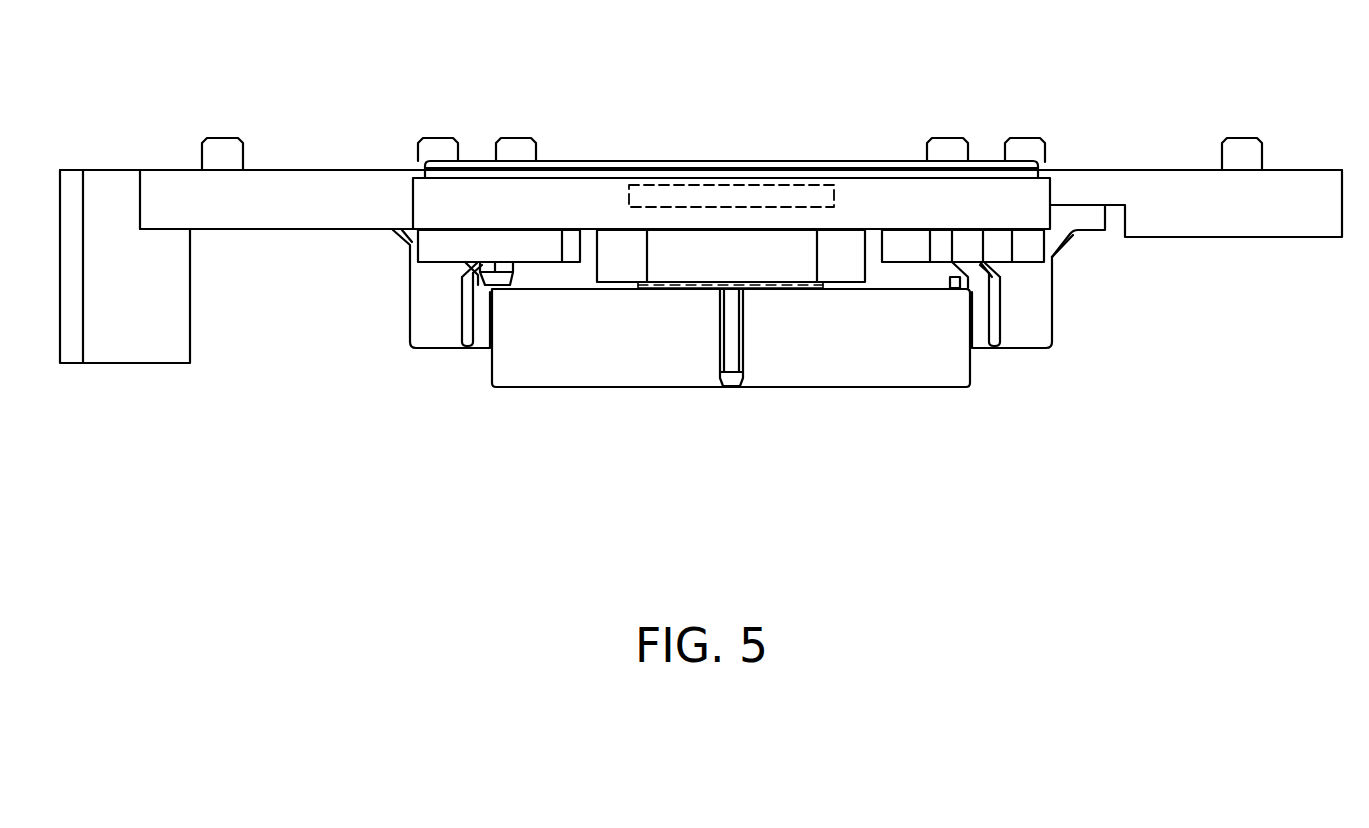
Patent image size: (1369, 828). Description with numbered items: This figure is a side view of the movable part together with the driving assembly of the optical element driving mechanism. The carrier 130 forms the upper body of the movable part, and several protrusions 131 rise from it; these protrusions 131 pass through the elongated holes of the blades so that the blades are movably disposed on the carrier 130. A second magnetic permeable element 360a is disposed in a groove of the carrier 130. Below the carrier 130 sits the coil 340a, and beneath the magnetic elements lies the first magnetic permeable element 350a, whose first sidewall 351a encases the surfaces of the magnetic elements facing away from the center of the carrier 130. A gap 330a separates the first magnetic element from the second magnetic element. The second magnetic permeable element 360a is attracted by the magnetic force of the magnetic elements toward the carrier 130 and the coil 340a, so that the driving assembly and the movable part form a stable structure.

The carrier 130 is at (1145, 182).
The protrusions 131 is at (441, 323).
The gap 330a is at (737, 355).
The coil 340a is at (793, 253).
The first magnetic permeable element 350a is at (731, 399).
The first sidewall 351a is at (612, 368).
The second magnetic permeable element 360a is at (728, 183).